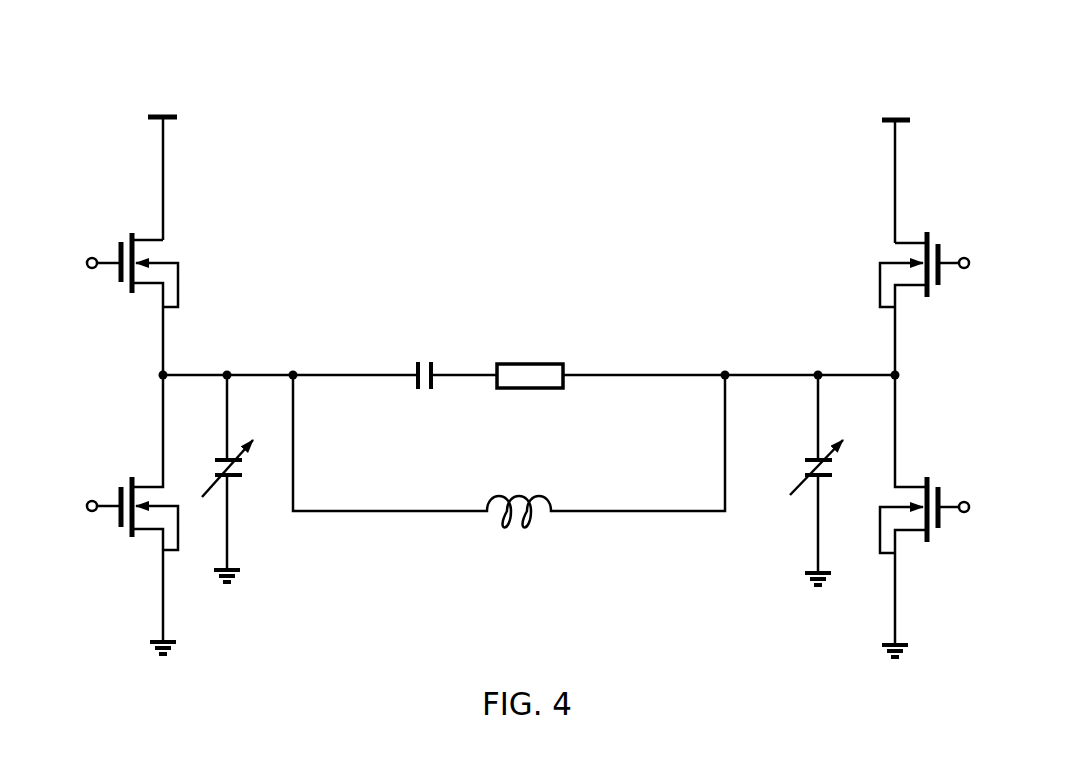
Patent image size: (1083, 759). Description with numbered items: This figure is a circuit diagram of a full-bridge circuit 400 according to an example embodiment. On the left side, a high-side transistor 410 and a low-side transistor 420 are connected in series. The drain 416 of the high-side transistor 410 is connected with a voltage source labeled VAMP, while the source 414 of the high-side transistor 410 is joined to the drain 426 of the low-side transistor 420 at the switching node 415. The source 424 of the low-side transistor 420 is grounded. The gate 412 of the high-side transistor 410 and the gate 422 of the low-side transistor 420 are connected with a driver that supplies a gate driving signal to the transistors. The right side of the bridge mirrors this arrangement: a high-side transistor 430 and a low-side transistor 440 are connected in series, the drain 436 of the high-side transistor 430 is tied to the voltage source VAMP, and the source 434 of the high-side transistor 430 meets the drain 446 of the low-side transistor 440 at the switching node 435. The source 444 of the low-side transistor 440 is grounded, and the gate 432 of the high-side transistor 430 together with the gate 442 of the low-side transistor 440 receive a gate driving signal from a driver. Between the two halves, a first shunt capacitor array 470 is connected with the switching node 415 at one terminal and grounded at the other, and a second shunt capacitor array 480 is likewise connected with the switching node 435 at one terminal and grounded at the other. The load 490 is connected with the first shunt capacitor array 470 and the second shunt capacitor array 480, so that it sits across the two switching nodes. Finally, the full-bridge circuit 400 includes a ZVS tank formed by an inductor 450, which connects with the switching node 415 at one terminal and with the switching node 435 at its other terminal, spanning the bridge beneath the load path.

The full-bridge circuit 400 is at (262, 55).
The high-side transistor 410 is at (205, 245).
The gate 412 is at (90, 277).
The source 414 is at (143, 298).
The switching node 415 is at (182, 360).
The drain 416 is at (148, 222).
The low-side transistor 420 is at (188, 555).
The gate 422 is at (90, 522).
The source 424 is at (143, 547).
The drain 426 is at (148, 470).
The high-side transistor 430 is at (872, 237).
The gate 432 is at (963, 248).
The source 434 is at (918, 299).
The switching node 435 is at (878, 357).
The drain 436 is at (913, 224).
The low-side transistor 440 is at (870, 558).
The gate 442 is at (963, 493).
The source 444 is at (913, 544).
The drain 446 is at (912, 467).
The inductor 450 is at (498, 534).
The first shunt capacitor array 470 is at (253, 473).
The second shunt capacitor array 480 is at (776, 471).
The load 490 is at (561, 401).